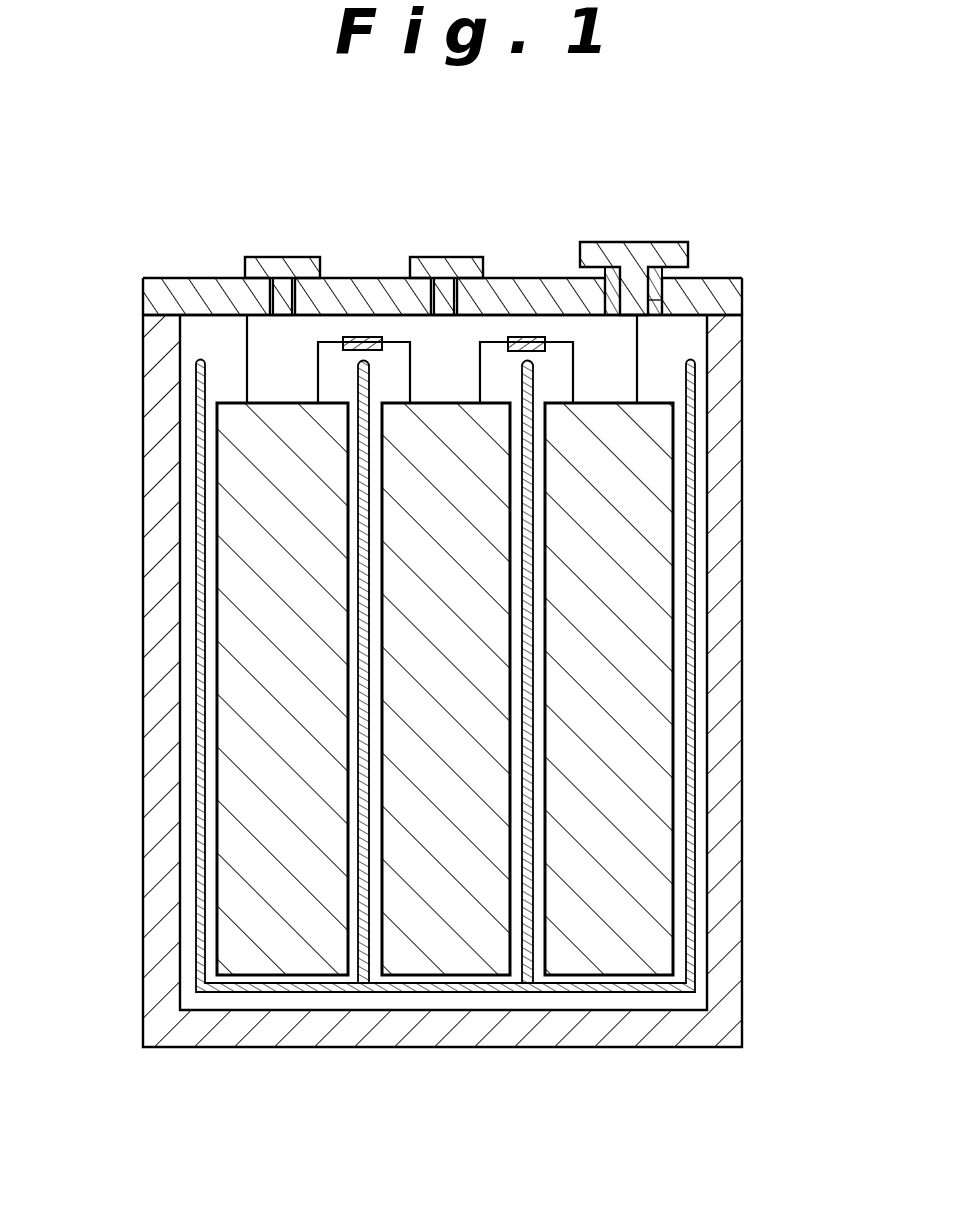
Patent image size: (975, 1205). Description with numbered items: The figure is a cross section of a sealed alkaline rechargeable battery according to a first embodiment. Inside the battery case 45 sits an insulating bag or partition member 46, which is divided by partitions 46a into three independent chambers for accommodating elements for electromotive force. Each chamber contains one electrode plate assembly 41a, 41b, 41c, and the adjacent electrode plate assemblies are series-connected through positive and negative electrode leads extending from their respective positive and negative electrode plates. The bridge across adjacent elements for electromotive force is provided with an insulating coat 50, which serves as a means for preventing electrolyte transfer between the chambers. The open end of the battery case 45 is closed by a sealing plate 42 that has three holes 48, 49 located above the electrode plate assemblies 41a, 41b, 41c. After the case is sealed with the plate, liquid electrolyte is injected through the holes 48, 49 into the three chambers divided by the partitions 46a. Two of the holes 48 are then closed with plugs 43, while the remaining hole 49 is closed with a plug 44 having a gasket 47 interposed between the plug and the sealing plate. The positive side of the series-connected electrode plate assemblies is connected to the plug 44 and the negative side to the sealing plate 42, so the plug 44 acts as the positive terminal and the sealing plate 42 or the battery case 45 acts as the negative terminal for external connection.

The electrode plate assembly 41a is at (242, 622).
The electrode plate assembly 41b is at (447, 945).
The electrode plate assembly 41c is at (643, 833).
The sealing plate 42 is at (367, 277).
The plug 43 is at (277, 257).
The plug 44 is at (638, 243).
The battery case 45 is at (745, 532).
The insulating bag or partition member 46 is at (692, 705).
The partition 46a is at (358, 745).
The gasket 47 is at (658, 290).
The hole 48 is at (272, 296).
The hole 49 is at (652, 302).
The insulating coat 50 is at (345, 352).